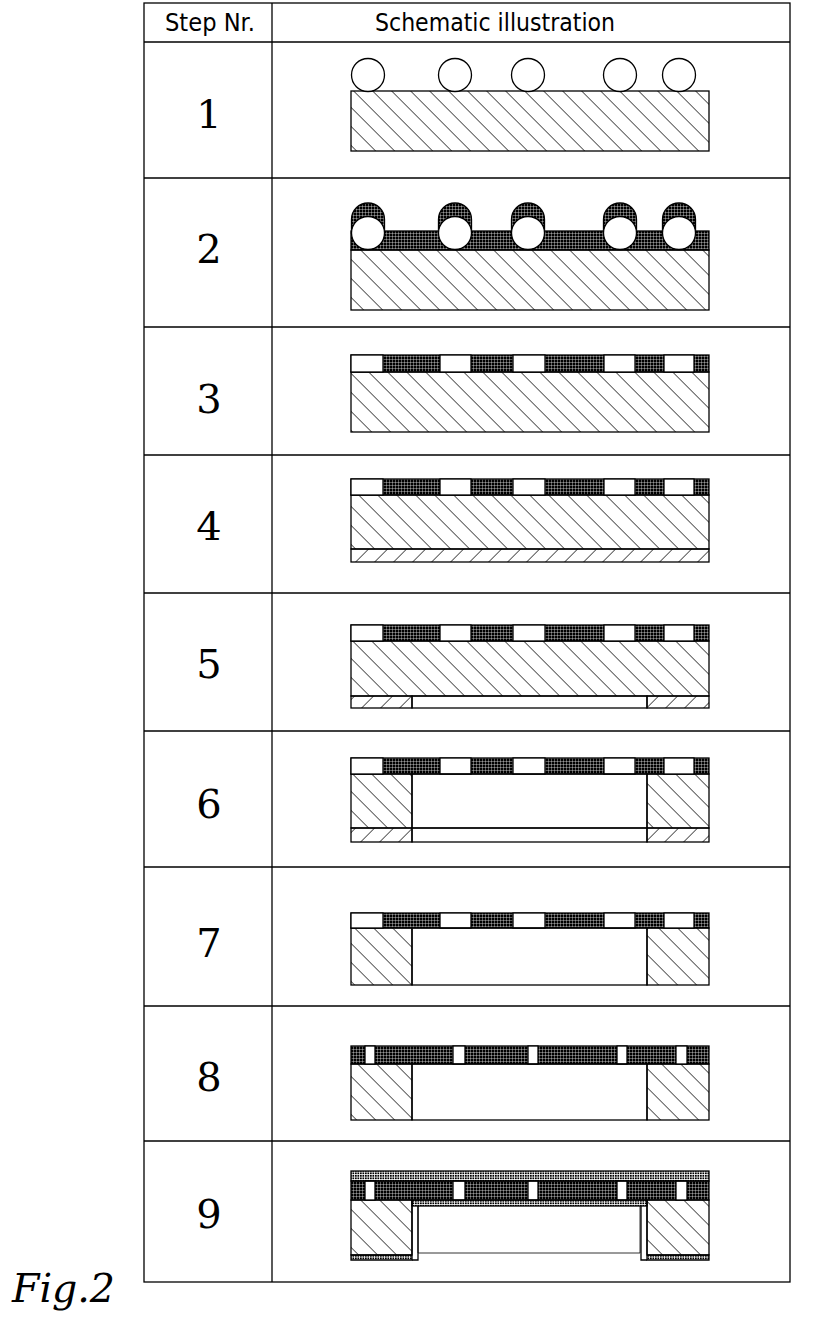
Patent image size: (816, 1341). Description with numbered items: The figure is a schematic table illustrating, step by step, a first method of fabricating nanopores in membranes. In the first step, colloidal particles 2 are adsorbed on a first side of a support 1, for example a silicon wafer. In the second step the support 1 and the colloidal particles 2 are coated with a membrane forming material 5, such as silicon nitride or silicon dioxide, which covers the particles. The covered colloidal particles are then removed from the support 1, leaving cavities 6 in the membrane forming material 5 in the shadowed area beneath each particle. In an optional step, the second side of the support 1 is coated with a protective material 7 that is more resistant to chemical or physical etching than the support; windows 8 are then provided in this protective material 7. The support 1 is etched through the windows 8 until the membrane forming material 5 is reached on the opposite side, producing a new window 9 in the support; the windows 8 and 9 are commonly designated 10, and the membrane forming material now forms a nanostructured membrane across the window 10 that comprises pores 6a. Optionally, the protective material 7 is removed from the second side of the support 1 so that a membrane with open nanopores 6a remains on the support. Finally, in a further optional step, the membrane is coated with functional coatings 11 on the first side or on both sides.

The support 1 is at (690, 120).
The colloidal particles 2 is at (623, 78).
The membrane forming material 5 is at (604, 216).
The cavities 6 is at (362, 362).
The pores 6a is at (458, 764).
The protective material 7 is at (705, 557).
The windows 8 is at (597, 700).
The new window 9 is at (519, 813).
The windows 10 is at (513, 968).
The functional coatings 11 is at (515, 1171).